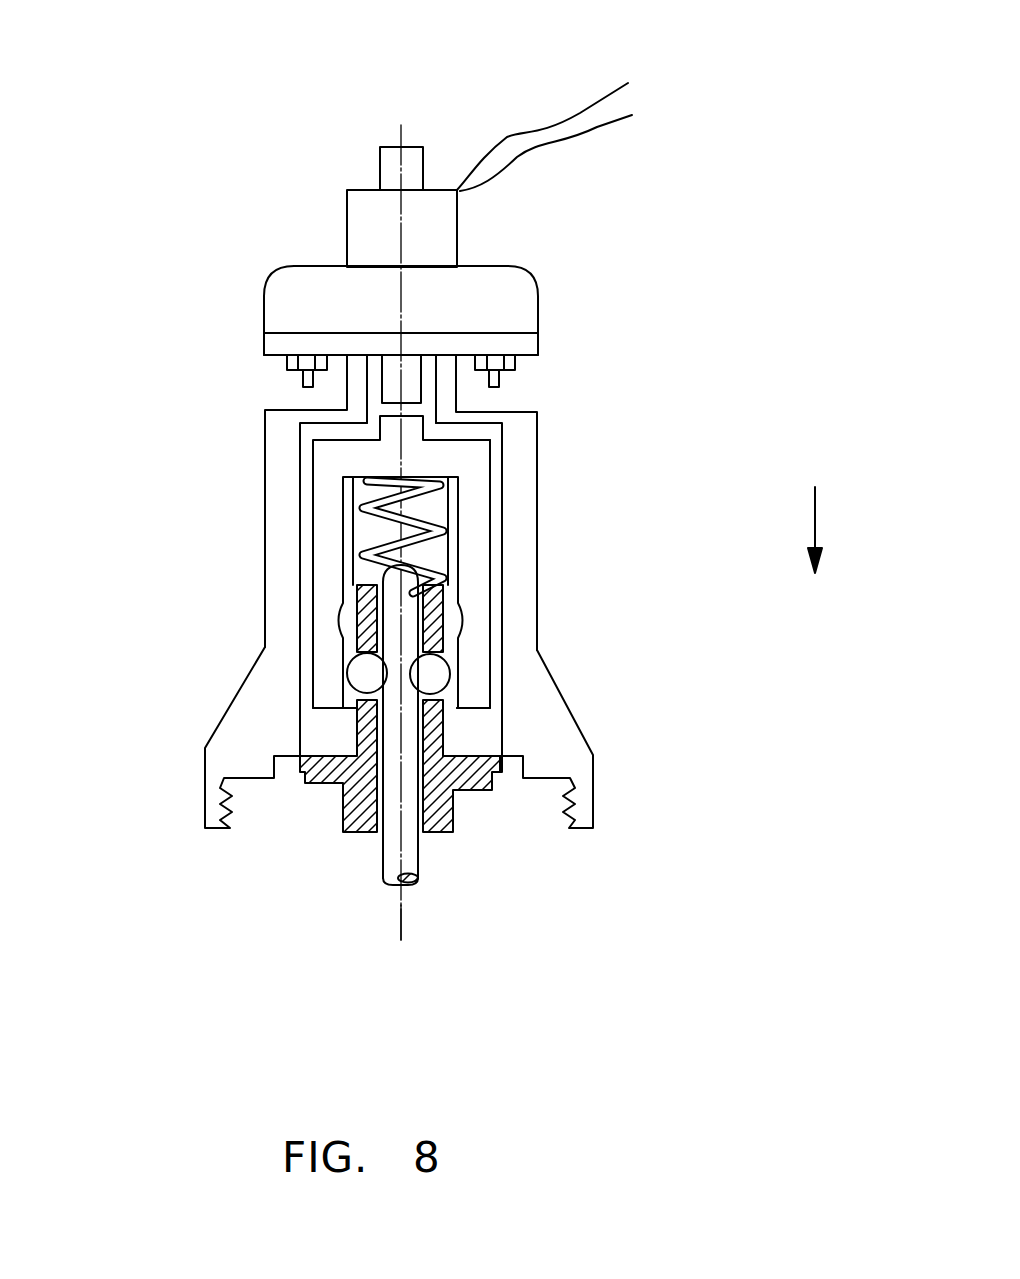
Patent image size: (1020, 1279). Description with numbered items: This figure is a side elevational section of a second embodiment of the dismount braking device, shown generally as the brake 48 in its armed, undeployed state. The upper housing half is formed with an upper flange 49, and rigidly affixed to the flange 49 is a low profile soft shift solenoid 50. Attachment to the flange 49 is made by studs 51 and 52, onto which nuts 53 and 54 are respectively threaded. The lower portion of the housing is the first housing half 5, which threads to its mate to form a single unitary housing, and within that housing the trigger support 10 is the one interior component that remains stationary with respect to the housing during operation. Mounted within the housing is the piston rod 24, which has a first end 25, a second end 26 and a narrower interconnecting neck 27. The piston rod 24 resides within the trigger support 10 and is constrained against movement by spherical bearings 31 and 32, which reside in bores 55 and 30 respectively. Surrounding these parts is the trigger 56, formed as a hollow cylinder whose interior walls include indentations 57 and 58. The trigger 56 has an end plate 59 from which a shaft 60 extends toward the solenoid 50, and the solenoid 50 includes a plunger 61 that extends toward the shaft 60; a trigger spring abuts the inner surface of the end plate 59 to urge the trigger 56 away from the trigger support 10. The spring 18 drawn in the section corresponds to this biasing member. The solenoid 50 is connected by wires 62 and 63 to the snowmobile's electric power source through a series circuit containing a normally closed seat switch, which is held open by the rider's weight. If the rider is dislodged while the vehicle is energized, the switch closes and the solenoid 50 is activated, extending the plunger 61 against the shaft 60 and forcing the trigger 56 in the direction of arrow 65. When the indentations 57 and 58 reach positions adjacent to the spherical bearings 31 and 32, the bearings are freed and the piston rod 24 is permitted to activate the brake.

The first housing half 5 is at (235, 692).
The trigger support 10 is at (472, 788).
The spring 18 is at (362, 518).
The piston rod 24 is at (381, 933).
The first end 25 is at (445, 631).
The second end 26 is at (390, 837).
The neck 27 is at (395, 680).
The bore 30 is at (350, 693).
The spherical bearing 31 is at (432, 680).
The spherical bearing 32 is at (360, 670).
The brake 48 is at (697, 261).
The upper flange 49 is at (527, 352).
The low profile soft shift solenoid 50 is at (513, 298).
The stud 51 is at (503, 388).
The stud 52 is at (307, 391).
The nut 53 is at (517, 373).
The nut 54 is at (292, 373).
The bore 55 is at (450, 692).
The trigger 56 is at (478, 513).
The indentation 57 is at (333, 615).
The indentation 58 is at (407, 622).
The end plate 59 is at (474, 458).
The shaft 60 is at (392, 436).
The plunger 61 is at (397, 348).
The wire 62 is at (610, 103).
The wire 63 is at (605, 123).
The arrow 65 is at (816, 522).